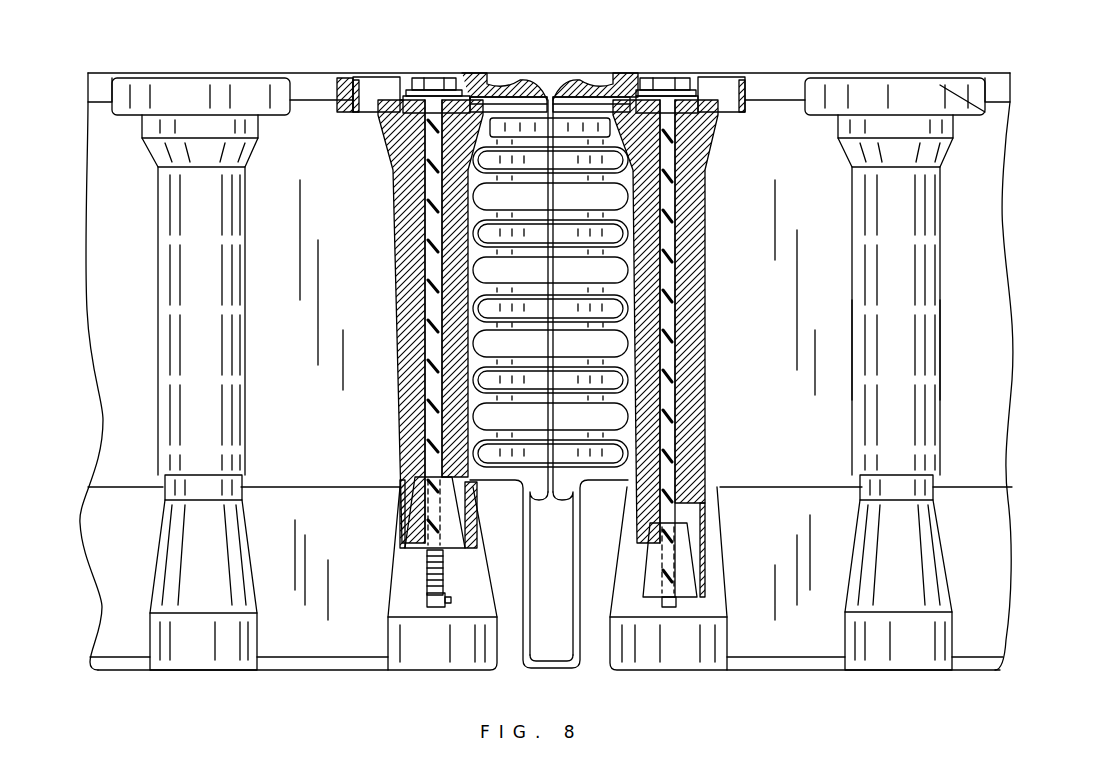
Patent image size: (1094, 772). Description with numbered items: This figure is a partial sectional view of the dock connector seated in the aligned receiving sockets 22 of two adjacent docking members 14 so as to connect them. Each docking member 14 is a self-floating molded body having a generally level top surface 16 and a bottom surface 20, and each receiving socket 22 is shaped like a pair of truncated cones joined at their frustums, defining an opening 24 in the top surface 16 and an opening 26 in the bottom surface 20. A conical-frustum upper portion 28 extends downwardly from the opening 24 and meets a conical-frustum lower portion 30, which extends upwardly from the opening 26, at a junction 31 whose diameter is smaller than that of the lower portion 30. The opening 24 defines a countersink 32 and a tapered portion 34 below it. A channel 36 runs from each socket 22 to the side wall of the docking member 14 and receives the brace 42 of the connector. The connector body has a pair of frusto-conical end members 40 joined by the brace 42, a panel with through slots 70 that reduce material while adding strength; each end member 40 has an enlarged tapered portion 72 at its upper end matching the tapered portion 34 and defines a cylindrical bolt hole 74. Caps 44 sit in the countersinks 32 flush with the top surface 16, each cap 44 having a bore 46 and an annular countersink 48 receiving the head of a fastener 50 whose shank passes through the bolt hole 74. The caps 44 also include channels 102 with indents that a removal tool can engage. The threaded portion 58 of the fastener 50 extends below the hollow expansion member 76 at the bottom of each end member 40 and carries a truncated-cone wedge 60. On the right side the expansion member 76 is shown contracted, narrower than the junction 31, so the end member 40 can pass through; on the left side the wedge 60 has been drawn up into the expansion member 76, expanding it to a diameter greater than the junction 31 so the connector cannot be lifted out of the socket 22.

The docking member 14 is at (112, 58).
The top surface 16 is at (770, 73).
The bottom surface 20 is at (795, 672).
The receiving socket 22 is at (948, 370).
The opening 24 is at (895, 73).
The opening 26 is at (903, 672).
The upper portion 28 is at (945, 268).
The lower portion 30 is at (943, 540).
The junction 31 is at (927, 483).
The countersink 32 is at (985, 112).
The tapered portion 34 is at (948, 152).
The channel 36 is at (551, 83).
The end member 40 is at (395, 268).
The brace 42 is at (567, 480).
The cap 44 is at (377, 95).
The bore 46 is at (678, 107).
The annular countersink 48 is at (645, 80).
The fastener 50 is at (430, 93).
The threaded portion 58 is at (427, 577).
The wedge 60 is at (405, 536).
The through slot 70 is at (515, 452).
The enlarged tapered portion 72 is at (377, 140).
The bolt hole 74 is at (398, 352).
The expansion member 76 is at (700, 527).
The channel 102 is at (487, 93).